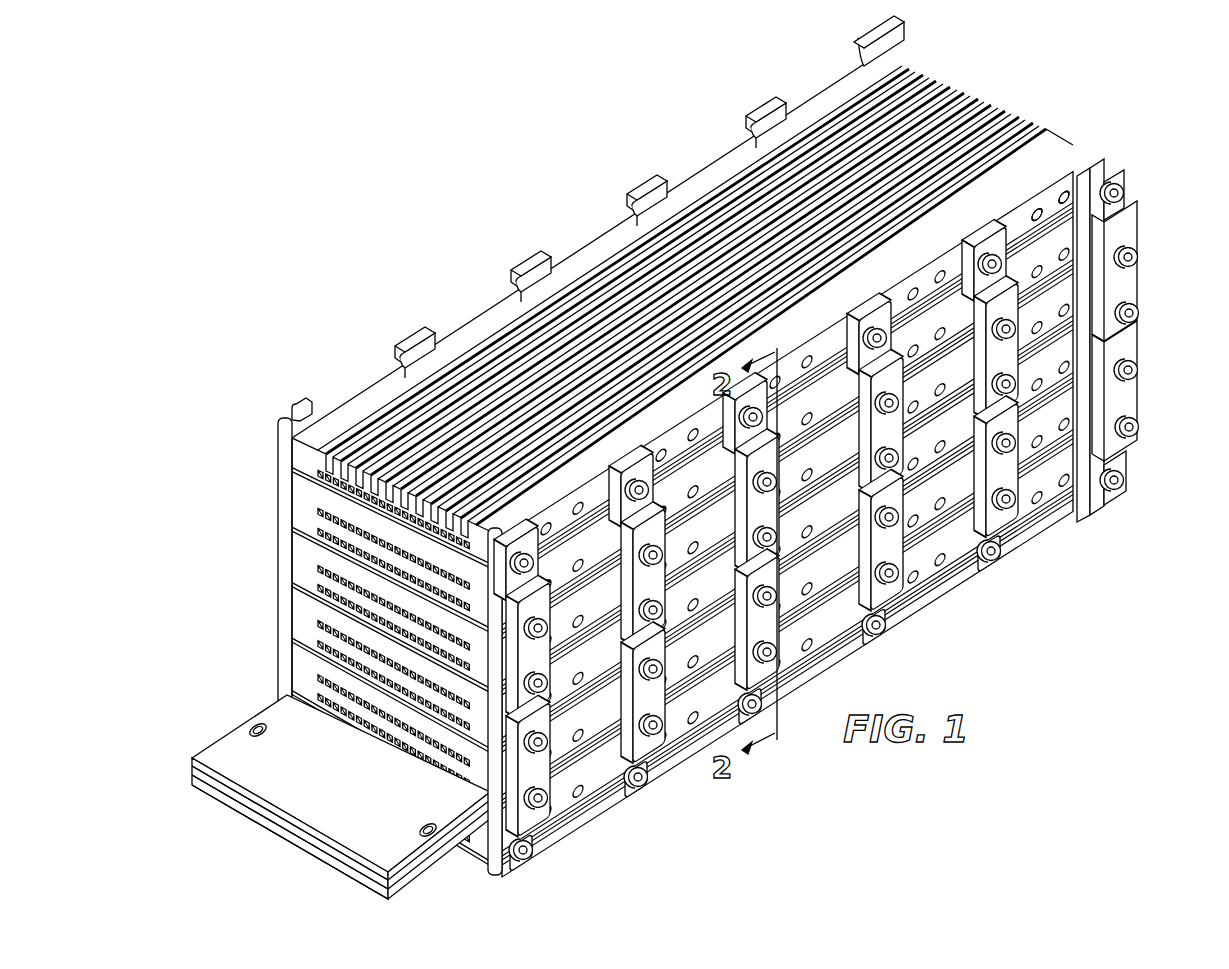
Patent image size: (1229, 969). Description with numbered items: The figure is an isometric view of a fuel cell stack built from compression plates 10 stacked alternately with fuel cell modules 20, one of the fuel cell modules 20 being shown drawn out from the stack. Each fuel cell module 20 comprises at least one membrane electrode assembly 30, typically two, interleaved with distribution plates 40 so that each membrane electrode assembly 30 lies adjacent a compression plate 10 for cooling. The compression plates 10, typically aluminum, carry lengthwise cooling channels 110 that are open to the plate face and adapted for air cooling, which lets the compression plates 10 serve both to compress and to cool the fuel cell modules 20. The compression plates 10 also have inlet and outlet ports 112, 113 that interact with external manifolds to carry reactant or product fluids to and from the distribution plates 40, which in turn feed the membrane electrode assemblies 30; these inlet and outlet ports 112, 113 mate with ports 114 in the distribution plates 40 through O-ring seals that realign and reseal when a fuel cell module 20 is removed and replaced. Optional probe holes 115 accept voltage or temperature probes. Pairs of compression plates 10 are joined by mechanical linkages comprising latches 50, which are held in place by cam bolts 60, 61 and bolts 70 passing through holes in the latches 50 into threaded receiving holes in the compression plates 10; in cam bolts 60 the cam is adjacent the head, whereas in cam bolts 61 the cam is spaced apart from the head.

The compression plate 10 is at (687, 490).
The fuel cell module 20 is at (371, 684).
The membrane electrode assembly 30 is at (221, 788).
The distribution plate 40 is at (266, 810).
The latch 50 is at (1132, 238).
The cam bolt 60 is at (1140, 313).
The cam bolt 61 is at (1139, 266).
The bolt 70 is at (1125, 193).
The cooling channel 110 is at (992, 92).
The inlet port 112 is at (1060, 195).
The outlet port 113 is at (1034, 210).
The port 114 is at (250, 727).
The probe hole 115 is at (303, 824).